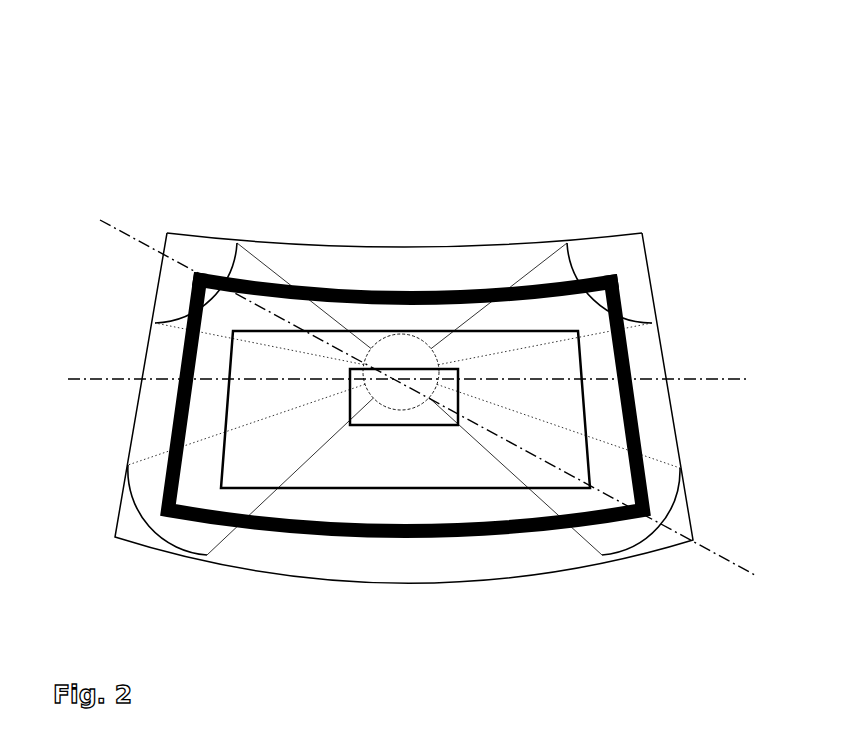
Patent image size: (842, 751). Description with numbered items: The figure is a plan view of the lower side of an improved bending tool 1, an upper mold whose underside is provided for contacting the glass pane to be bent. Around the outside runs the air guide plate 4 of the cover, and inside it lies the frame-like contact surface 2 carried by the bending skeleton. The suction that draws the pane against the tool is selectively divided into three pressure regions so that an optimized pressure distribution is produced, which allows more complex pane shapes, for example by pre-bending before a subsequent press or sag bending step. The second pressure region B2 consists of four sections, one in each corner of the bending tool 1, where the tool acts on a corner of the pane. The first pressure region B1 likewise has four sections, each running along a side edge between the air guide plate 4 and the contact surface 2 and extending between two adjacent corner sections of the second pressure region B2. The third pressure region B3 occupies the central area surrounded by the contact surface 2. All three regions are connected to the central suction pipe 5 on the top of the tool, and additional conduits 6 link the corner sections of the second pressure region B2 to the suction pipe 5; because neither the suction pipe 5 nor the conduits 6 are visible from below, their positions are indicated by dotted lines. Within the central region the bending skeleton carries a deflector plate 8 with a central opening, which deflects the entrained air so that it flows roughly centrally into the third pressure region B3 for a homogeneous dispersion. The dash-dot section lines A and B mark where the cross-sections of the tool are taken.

The bending tool 1 is at (697, 147).
The contact surface 2 is at (402, 292).
The air guide plate 4 is at (367, 245).
The suction pipe 5 is at (412, 347).
The conduits 6 is at (258, 275).
The deflector plate 8 is at (490, 488).
The first pressure region B1 is at (481, 261).
The second pressure region B2 is at (218, 246).
The third pressure region B3 is at (386, 517).
The section line A-A' A is at (409, 378).
The section line B-B' B is at (430, 394).